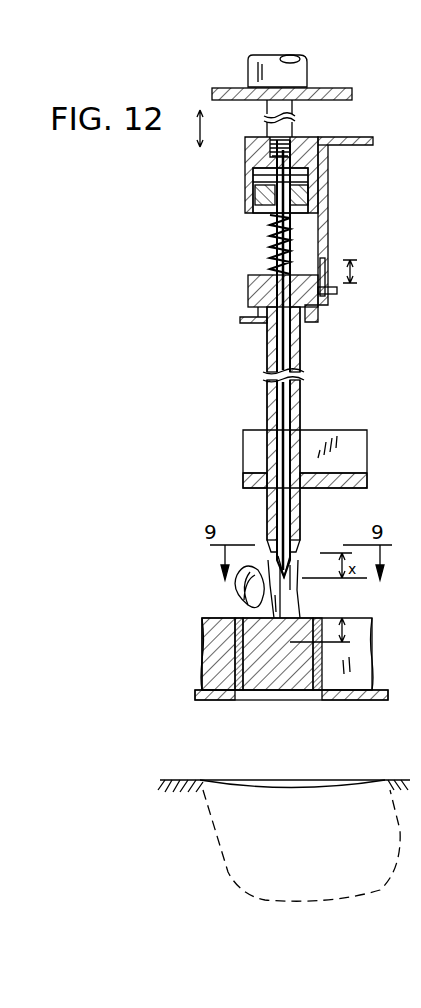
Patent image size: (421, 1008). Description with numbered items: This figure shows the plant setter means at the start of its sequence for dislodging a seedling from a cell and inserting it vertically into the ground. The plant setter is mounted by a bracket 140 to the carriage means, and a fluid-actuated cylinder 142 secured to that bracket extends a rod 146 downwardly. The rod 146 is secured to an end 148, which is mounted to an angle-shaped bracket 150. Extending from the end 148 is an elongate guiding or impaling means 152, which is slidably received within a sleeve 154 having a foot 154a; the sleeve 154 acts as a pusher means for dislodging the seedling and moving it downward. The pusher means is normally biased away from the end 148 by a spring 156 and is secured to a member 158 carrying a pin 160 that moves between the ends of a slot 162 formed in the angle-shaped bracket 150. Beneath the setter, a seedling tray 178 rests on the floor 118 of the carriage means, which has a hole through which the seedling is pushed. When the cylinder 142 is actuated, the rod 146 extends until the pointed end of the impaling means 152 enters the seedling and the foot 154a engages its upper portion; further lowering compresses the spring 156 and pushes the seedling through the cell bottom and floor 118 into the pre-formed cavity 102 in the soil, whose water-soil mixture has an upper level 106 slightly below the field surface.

The cavity 102 is at (226, 876).
The upper level 106 is at (228, 790).
The floor 118 is at (358, 701).
The bracket 140 is at (338, 100).
The cylinder 142 is at (317, 71).
The rod 146 is at (262, 117).
The end 148 is at (322, 140).
The angle-shaped bracket 150 is at (329, 180).
The impaling means 152 is at (302, 404).
The sleeve 154 is at (268, 509).
The foot 154a is at (305, 556).
The spring 156 is at (268, 246).
The member 158 is at (247, 290).
The pin 160 is at (336, 294).
The slot 162 is at (330, 262).
The seedling tray 178 is at (383, 639).